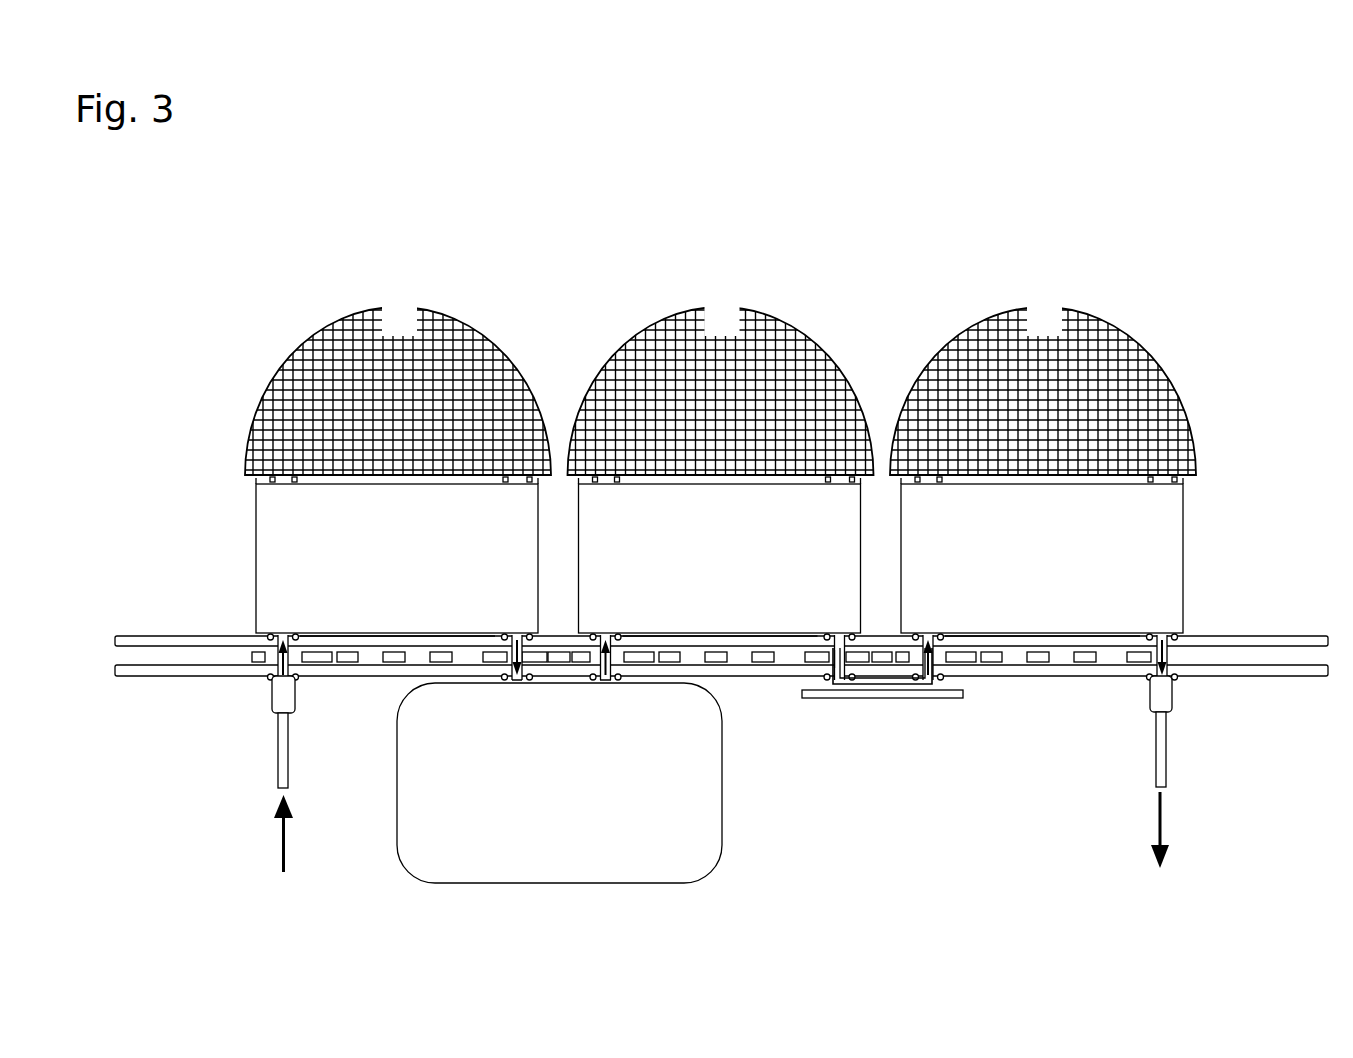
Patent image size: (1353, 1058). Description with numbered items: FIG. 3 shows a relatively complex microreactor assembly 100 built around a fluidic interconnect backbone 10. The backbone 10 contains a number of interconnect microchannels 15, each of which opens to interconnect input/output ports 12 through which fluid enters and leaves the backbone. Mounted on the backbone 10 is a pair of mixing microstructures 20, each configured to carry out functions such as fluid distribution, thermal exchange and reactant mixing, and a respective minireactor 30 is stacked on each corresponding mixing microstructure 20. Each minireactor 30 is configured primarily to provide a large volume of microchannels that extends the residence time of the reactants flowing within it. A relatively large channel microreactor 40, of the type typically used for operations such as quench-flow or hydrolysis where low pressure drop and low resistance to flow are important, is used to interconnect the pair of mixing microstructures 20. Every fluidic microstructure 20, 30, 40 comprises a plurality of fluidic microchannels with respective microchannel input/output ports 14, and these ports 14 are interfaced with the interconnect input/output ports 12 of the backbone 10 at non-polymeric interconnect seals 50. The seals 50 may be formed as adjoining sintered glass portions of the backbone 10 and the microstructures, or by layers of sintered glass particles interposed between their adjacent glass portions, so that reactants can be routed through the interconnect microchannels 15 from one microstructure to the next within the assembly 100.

The microreactor assembly 100 is at (1218, 215).
The fluidic interconnect backbone 10 is at (115, 622).
The interconnect input/output port 12 is at (296, 683).
The microchannel input/output port 14 is at (723, 618).
The interconnect microchannel 15 is at (526, 681).
The first microstructure 20 is at (411, 515).
The second microstructure 30 is at (411, 334).
The third microstructure 40 is at (570, 873).
The non-polymeric interconnect seal 50 is at (722, 605).